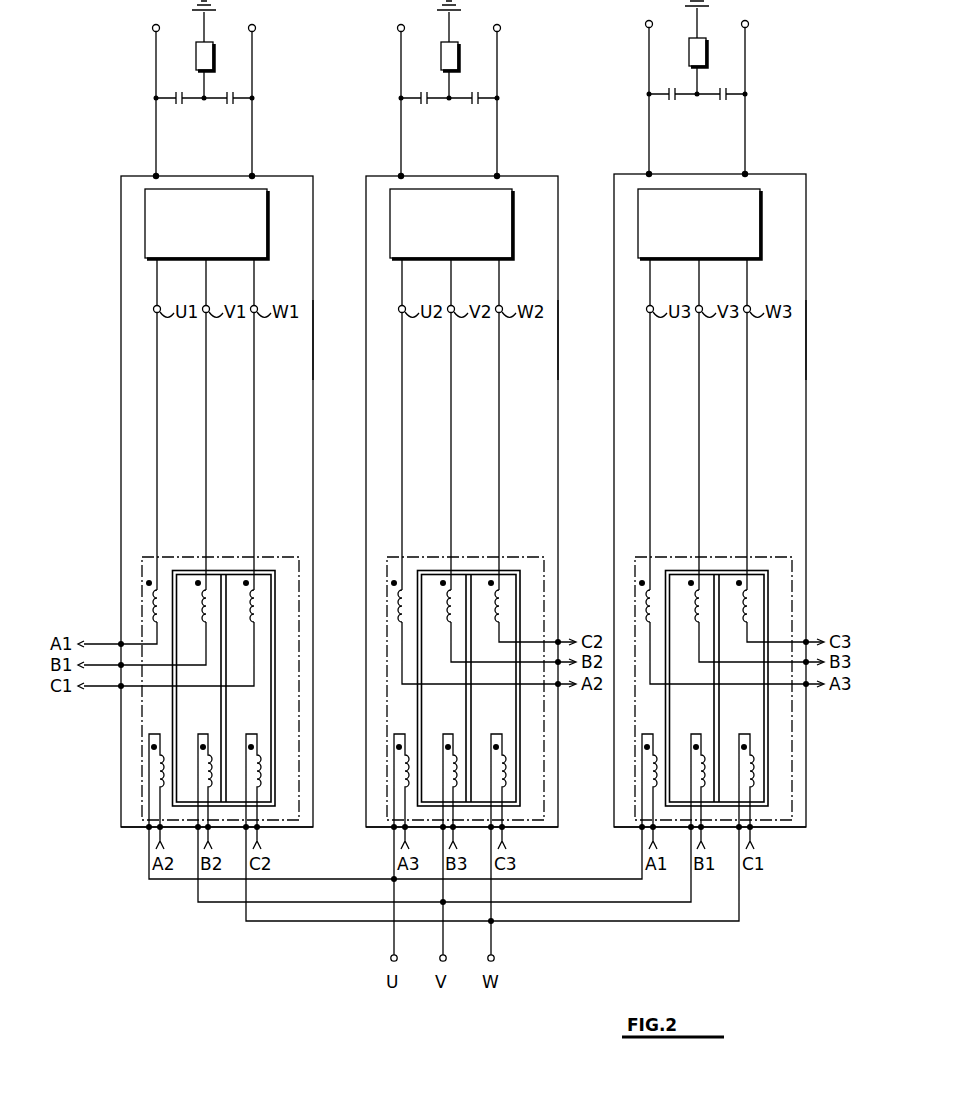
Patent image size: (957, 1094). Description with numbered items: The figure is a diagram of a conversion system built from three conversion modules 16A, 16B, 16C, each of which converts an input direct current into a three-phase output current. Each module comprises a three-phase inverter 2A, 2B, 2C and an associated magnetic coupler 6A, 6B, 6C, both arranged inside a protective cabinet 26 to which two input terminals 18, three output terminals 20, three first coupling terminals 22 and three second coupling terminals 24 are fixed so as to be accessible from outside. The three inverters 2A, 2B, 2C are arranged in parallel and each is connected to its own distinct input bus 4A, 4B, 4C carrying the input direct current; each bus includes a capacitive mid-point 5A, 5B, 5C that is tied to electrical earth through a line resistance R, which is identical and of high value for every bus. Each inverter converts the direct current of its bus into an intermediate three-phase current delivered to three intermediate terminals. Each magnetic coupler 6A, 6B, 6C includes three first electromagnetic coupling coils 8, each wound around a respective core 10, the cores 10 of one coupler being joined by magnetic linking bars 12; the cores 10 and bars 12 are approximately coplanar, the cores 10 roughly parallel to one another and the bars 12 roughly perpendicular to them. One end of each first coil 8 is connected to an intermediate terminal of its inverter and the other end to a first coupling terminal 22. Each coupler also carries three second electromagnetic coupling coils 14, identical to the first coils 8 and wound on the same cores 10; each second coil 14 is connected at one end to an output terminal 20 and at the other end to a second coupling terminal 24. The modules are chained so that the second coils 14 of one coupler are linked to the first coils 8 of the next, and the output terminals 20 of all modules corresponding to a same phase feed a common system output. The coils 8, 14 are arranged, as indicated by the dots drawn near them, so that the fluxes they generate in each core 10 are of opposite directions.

The first three-phase inverter 2A is at (206, 224).
The second three-phase inverter 2B is at (451, 224).
The third three-phase inverter 2C is at (699, 224).
The first input bus 4A is at (244, 76).
The second input bus 4B is at (489, 76).
The third input bus 4C is at (737, 74).
The capacitive mid-point 5A is at (204, 104).
The capacitive mid-point 5B is at (449, 104).
The capacitive mid-point 5C is at (697, 100).
The line resistance R is at (213, 56).
The first magnetic coupler 6A is at (299, 592).
The second magnetic coupler 6B is at (544, 592).
The third magnetic coupler 6C is at (792, 592).
The first electromagnetic coupling coil 8 is at (248, 618).
The core 10 is at (272, 712).
The magnetic linking bar 12 is at (448, 688).
The second electromagnetic coupling coil 14 is at (253, 780).
The first conversion module 16A is at (322, 268).
The second conversion module 16B is at (567, 268).
The third conversion module 16C is at (815, 268).
The input terminal 18 is at (156, 176).
The output terminal 20 is at (205, 825).
The first coupling terminal 22 is at (116, 690).
The second coupling terminal 24 is at (765, 928).
The protective cabinet 26 is at (313, 338).